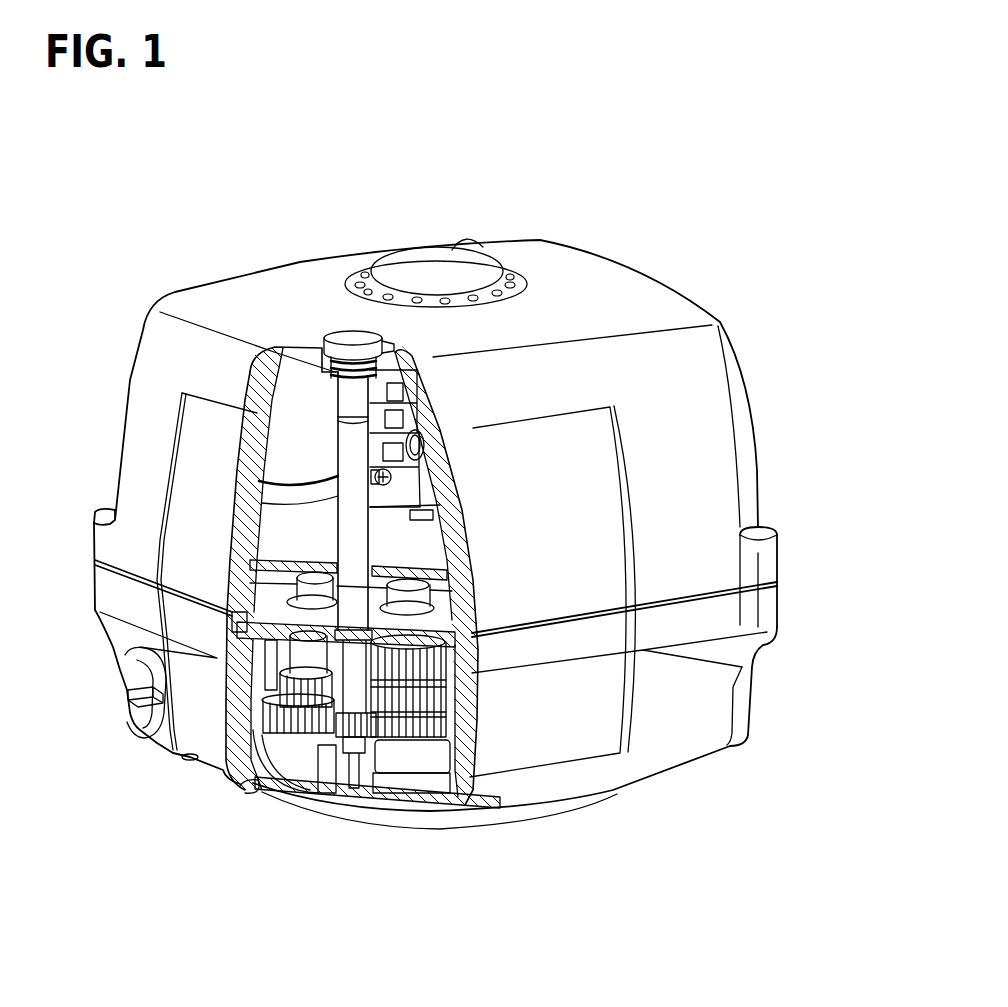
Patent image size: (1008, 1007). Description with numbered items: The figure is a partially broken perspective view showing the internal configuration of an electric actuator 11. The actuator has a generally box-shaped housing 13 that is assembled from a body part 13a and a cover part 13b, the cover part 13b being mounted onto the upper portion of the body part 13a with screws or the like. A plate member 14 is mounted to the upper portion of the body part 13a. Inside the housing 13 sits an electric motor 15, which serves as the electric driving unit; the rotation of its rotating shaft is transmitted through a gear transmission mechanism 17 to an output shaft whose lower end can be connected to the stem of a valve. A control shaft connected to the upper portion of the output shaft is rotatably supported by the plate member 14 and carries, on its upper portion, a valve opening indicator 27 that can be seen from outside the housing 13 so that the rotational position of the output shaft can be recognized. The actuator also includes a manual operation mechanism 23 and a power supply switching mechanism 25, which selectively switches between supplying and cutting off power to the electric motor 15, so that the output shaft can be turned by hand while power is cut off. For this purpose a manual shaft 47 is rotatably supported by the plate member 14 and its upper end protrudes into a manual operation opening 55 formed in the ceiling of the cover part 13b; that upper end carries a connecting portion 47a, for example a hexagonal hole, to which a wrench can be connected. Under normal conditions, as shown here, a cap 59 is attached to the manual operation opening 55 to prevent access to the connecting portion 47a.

The electric actuator 11 is at (694, 160).
The housing 13 is at (840, 541).
The body part 13a is at (777, 597).
The cover part 13b is at (777, 562).
The plate member 14 is at (283, 612).
The electric motor 15 is at (293, 447).
The gear transmission mechanism 17 is at (300, 742).
The manual operation mechanism 23 is at (336, 394).
The power supply switching mechanism 25 is at (122, 695).
The valve opening indicator 27 is at (428, 255).
The manual shaft 47 is at (355, 513).
The connecting portion 47a is at (343, 410).
The manual operation opening 55 is at (345, 337).
The cap 59 is at (380, 340).